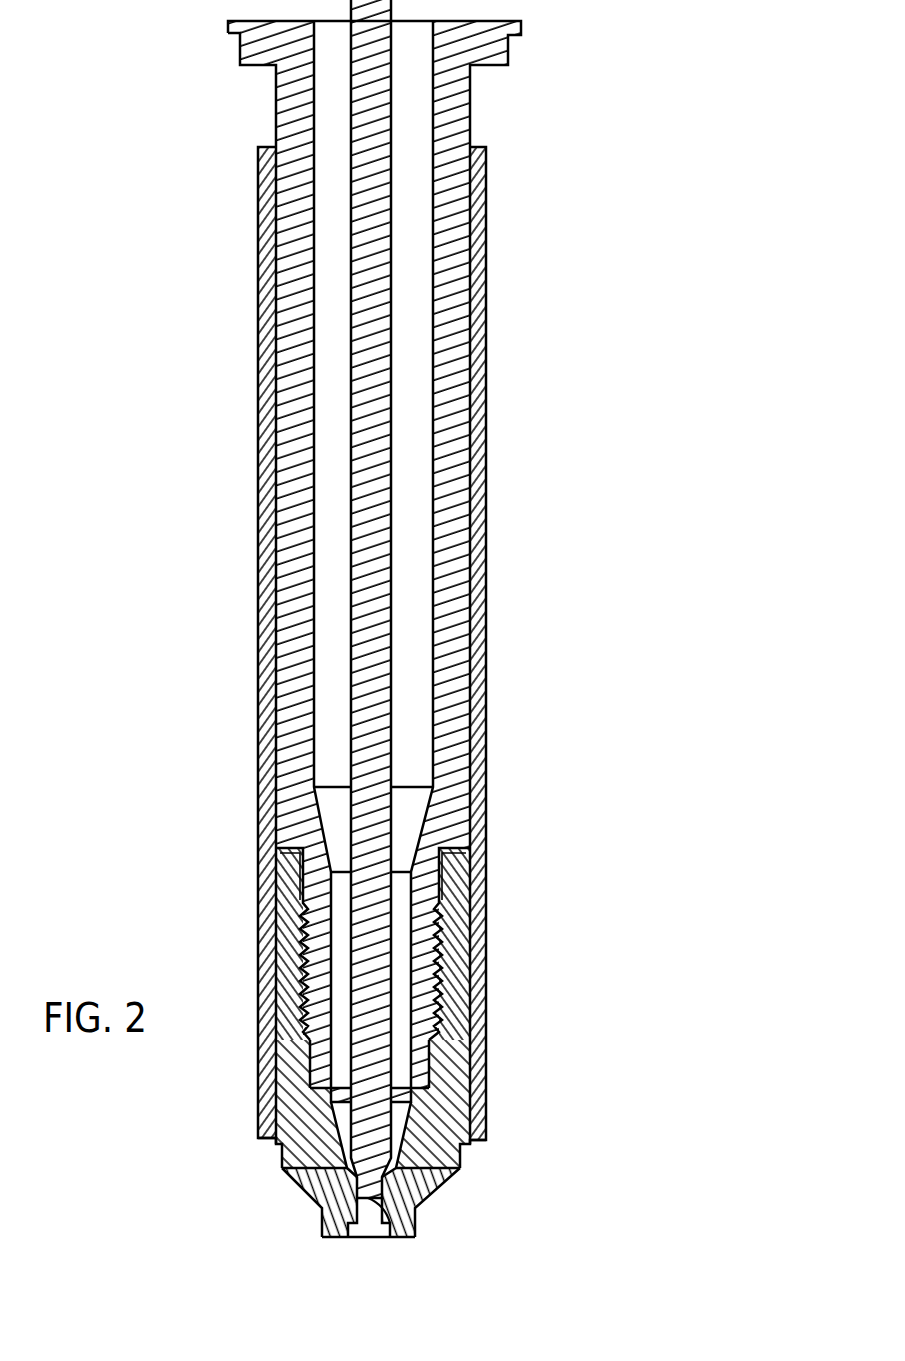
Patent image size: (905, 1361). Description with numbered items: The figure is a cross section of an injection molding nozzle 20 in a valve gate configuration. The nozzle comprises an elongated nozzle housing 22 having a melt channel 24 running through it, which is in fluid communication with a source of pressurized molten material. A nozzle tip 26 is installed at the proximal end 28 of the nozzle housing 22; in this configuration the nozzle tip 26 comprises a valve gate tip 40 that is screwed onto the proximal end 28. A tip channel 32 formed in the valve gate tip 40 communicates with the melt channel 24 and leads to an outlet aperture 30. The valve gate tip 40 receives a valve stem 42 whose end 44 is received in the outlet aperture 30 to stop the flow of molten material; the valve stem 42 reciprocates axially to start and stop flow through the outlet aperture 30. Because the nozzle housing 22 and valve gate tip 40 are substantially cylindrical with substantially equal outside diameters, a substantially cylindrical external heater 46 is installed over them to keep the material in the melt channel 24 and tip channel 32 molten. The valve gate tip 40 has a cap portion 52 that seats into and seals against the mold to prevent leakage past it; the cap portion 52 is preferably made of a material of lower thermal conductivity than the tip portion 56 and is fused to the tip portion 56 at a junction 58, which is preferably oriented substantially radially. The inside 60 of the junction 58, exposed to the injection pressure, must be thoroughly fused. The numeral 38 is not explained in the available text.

The injection molding nozzle 20 is at (198, 685).
The nozzle housing 22 is at (472, 115).
The melt channel 24 is at (412, 597).
The nozzle tip 26 is at (260, 1203).
The proximal end 28 is at (523, 1090).
The outlet aperture 30 is at (368, 1232).
The tip channel 32 is at (397, 1125).
The threaded retaining nut 38 is at (440, 982).
The valve gate tip 40 is at (282, 1150).
The valve stem 42 is at (392, 752).
The end of valve stem 44 is at (413, 1233).
The external heater 46 is at (486, 705).
The cap portion 52 is at (322, 1235).
The tip portion 56 is at (283, 1075).
The junction 58 is at (440, 1209).
The inside of junction 60 is at (402, 1163).